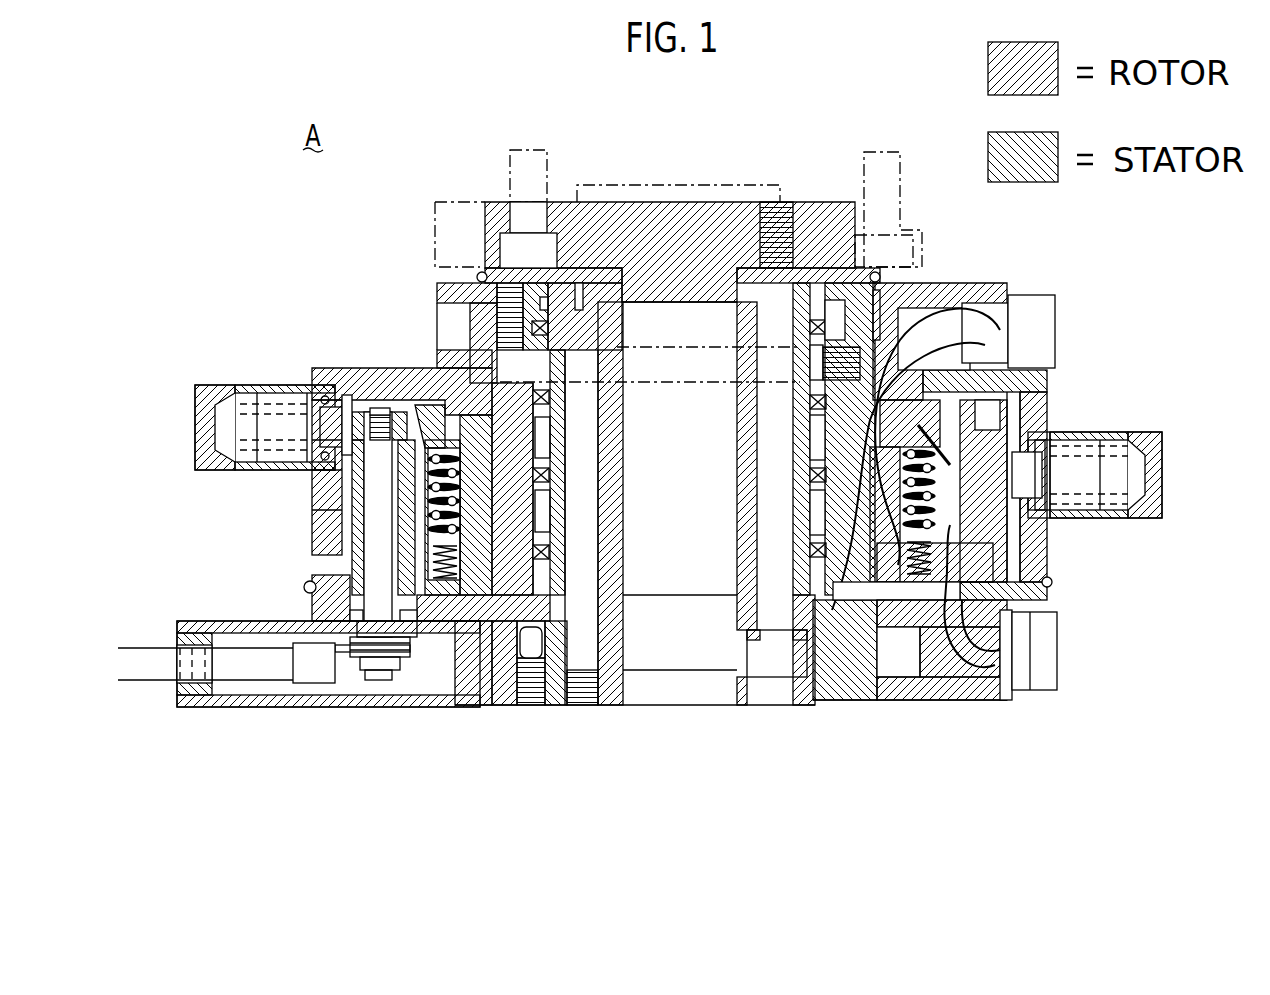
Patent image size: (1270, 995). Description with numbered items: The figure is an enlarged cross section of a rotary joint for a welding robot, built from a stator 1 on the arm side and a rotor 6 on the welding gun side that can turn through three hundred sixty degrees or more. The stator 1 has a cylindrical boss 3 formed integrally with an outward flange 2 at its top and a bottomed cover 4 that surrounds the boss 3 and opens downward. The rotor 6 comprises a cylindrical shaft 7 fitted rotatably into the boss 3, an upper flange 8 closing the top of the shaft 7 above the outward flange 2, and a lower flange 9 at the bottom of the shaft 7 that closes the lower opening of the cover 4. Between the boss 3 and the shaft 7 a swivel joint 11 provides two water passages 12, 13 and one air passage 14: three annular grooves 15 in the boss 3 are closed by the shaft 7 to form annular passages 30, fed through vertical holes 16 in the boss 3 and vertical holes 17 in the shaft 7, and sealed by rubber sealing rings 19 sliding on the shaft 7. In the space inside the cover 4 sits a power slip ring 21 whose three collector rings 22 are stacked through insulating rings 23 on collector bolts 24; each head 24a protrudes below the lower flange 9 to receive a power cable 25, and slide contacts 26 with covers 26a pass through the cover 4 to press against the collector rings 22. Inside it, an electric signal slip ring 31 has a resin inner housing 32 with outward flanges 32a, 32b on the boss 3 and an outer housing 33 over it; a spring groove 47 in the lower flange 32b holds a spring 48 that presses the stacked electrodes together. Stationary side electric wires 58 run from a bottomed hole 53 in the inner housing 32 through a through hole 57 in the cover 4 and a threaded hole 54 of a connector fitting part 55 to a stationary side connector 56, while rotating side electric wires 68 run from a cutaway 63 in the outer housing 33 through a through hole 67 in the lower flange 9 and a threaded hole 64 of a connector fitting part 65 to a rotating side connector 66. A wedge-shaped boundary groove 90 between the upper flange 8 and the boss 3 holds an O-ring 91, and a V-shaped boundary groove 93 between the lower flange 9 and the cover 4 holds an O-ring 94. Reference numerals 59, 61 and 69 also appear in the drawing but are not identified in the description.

The stator 1 is at (367, 358).
The outward flange 2 is at (315, 378).
The cylindrical boss 3 is at (499, 696).
The cover 4 is at (348, 503).
The rotor 6 is at (622, 715).
The cylindrical shaft 7 is at (622, 443).
The upper flange 8 is at (676, 204).
The lower flange 9 is at (465, 690).
The swivel joint 11 is at (810, 433).
The water passage 12 is at (622, 343).
The water passage 13 is at (543, 430).
The air passage 14 is at (543, 517).
The annular groove 15 is at (812, 362).
The vertical hole 16 is at (500, 325).
The vertical hole 17 is at (594, 583).
The sealing ring 19 is at (552, 399).
The power slip ring 21 is at (260, 375).
The collector ring 22 is at (343, 398).
The insulating ring 23 is at (290, 462).
The collector bolt 24 is at (378, 692).
The head 24a is at (360, 667).
The power cable 25 is at (250, 683).
The slide contact 26 is at (1158, 470).
The cover 26a is at (1162, 505).
The annular passage 30 is at (812, 394).
The electric signal slip ring 31 is at (918, 560).
The inner housing 32 is at (552, 487).
The outward flange 32a is at (510, 347).
The outward flange 32b is at (440, 625).
The outer housing 33 is at (304, 587).
The spring groove 47 is at (948, 540).
The spring 48 is at (872, 545).
The bottomed hole 53 is at (880, 345).
The threaded hole 54 is at (986, 306).
The connector fitting part 55 is at (986, 283).
The stationary side connector 56 is at (1055, 320).
The through hole 57 is at (885, 430).
The stationary side electric wire 58 is at (940, 336).
The cable 59 is at (988, 330).
The nut 61 is at (808, 673).
The cutaway 63 is at (1015, 560).
The threaded hole 64 is at (990, 680).
The connector fitting part 65 is at (962, 703).
The rotating side connector 66 is at (1055, 680).
The through hole 67 is at (1015, 626).
The rotating side electric wire 68 is at (977, 643).
The sensor cable 69 is at (987, 647).
The boundary groove 90 is at (477, 274).
The O-ring 91 is at (880, 275).
The boundary groove 93 is at (1052, 583).
The O-ring 94 is at (312, 598).